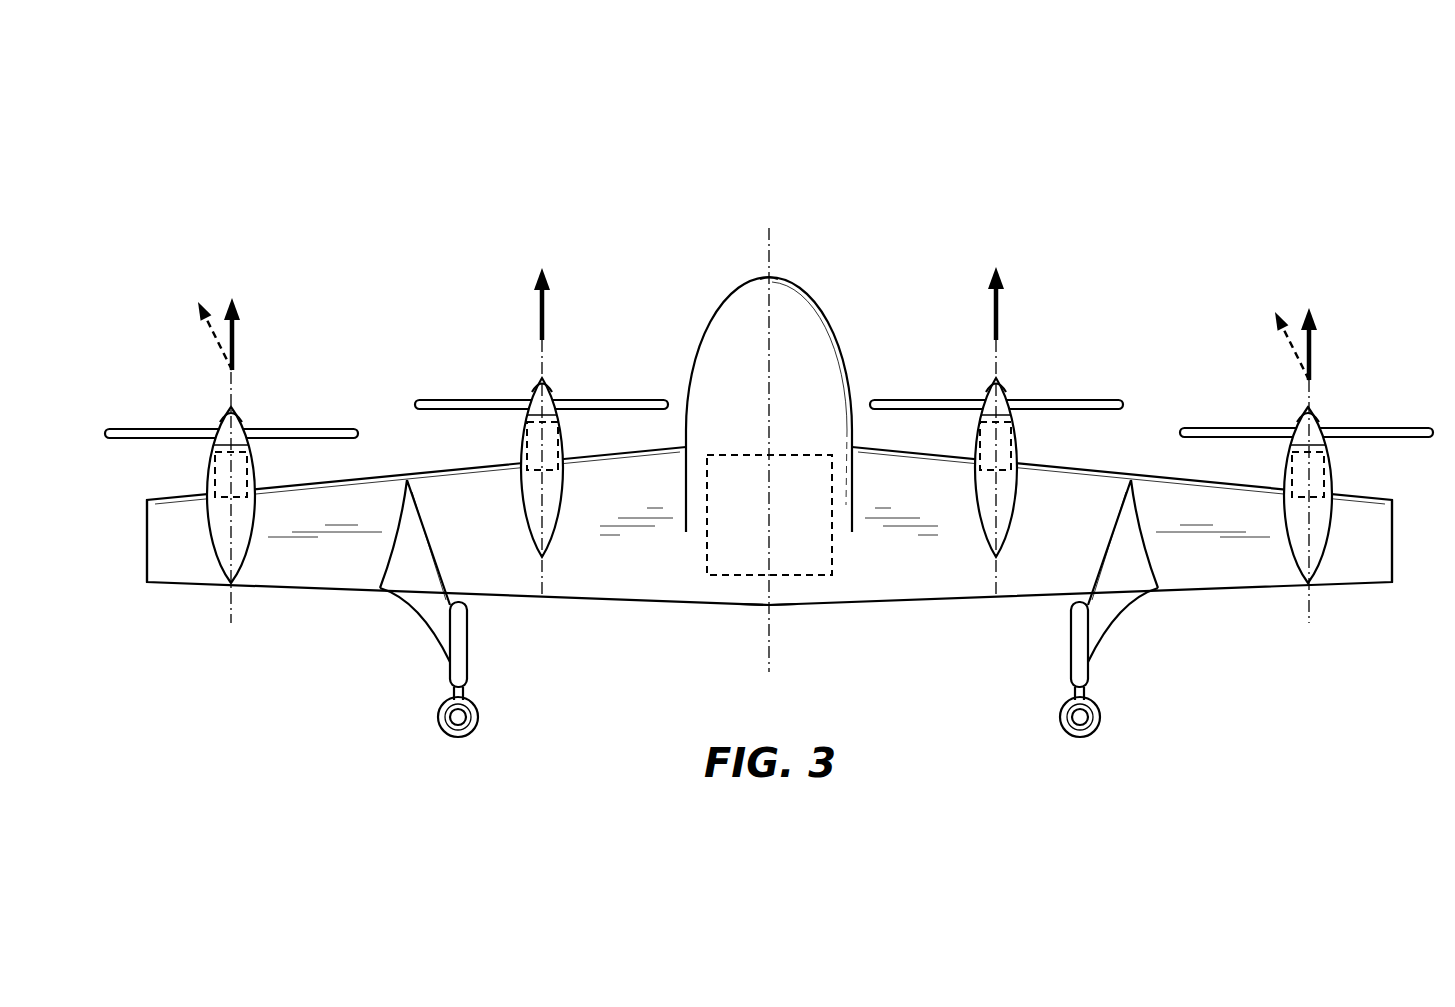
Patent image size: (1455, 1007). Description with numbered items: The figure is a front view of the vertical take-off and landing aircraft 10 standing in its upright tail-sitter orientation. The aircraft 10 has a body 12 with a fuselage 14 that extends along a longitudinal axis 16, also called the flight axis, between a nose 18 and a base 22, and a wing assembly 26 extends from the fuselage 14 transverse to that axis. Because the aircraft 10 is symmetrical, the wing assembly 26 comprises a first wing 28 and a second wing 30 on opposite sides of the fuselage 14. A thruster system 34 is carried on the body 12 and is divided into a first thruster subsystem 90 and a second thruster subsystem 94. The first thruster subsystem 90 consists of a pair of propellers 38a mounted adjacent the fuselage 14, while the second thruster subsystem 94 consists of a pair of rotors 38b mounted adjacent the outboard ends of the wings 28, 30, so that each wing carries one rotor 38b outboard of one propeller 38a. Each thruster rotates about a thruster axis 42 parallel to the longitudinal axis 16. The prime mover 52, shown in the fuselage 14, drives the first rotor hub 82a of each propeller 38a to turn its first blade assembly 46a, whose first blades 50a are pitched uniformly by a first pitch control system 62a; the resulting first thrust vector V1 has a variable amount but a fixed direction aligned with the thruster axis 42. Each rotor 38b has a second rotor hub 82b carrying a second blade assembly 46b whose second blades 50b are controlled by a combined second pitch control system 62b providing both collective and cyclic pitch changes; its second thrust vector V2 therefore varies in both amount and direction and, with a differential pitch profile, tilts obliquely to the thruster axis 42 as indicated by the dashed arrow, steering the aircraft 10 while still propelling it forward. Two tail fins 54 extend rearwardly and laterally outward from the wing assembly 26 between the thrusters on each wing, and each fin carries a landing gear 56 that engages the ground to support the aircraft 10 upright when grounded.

The aircraft 10 is at (765, 445).
The body 12 is at (858, 543).
The fuselage 14 is at (805, 323).
The longitudinal axis 16 is at (771, 635).
The nose 18 is at (768, 277).
The base 22 is at (752, 593).
The wing assembly 26 is at (1090, 503).
The first wing 28 is at (1383, 555).
The second wing 30 is at (152, 553).
The thruster system 34 is at (1128, 251).
The propeller 38a is at (560, 507).
The rotor 38b is at (243, 540).
The thruster axis 42 is at (232, 393).
The first blade assembly 46a is at (478, 372).
The second blade assembly 46b is at (165, 401).
The first blades 50a is at (450, 400).
The second blades 50b is at (150, 430).
The prime mover 52 is at (795, 455).
The tail fins 54 is at (426, 606).
The landing gears 56 is at (438, 717).
The first pitch control system 62a is at (518, 457).
The second pitch control system 62b is at (208, 478).
The first rotor hub 82a is at (532, 382).
The second rotor hub 82b is at (212, 410).
The first thruster subsystem 90 is at (588, 268).
The second thruster subsystem 94 is at (289, 311).
The first thrust vector V1 is at (542, 295).
The second thrust vector V2 is at (196, 318).